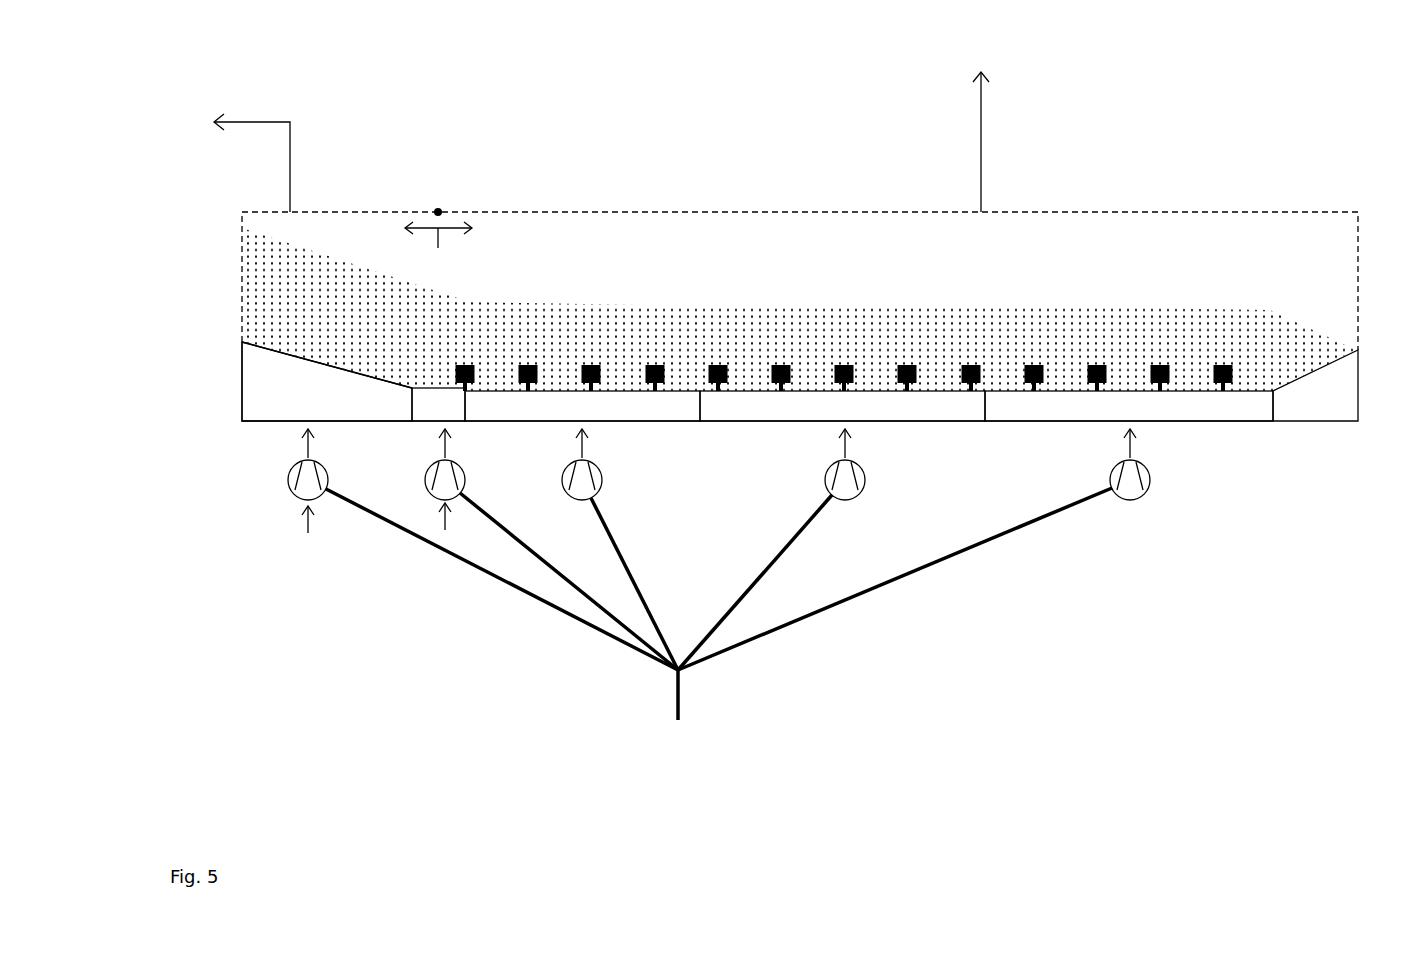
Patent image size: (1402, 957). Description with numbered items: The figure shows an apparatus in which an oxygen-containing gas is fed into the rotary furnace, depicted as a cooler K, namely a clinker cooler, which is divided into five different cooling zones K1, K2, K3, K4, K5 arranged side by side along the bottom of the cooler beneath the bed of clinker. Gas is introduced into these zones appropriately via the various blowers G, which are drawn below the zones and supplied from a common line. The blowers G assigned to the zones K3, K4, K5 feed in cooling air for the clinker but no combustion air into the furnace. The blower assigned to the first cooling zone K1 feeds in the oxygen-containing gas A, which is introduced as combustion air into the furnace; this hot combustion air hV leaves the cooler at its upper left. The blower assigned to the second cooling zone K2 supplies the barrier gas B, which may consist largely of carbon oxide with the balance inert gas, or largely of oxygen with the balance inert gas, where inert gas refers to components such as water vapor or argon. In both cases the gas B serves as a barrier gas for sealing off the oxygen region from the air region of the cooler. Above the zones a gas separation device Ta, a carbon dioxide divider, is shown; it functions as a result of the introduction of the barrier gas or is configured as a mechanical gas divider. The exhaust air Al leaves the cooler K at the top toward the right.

The cooler K is at (1170, 190).
The first cooling zone K1 is at (327, 381).
The second cooling zone K2 is at (438, 404).
The third cooling zone K3 is at (582, 406).
The fourth cooling zone K4 is at (842, 406).
The fifth cooling zone K5 is at (1129, 406).
The hot combustion air hV is at (252, 146).
The exhaust air Al is at (980, 126).
The gas separation device Ta is at (442, 210).
The oxygen-containing gas A is at (308, 497).
The barrier gas B is at (445, 493).
The blower G is at (719, 623).